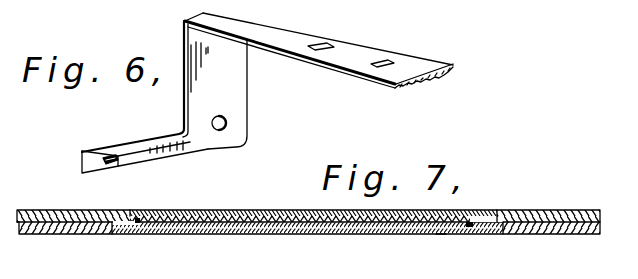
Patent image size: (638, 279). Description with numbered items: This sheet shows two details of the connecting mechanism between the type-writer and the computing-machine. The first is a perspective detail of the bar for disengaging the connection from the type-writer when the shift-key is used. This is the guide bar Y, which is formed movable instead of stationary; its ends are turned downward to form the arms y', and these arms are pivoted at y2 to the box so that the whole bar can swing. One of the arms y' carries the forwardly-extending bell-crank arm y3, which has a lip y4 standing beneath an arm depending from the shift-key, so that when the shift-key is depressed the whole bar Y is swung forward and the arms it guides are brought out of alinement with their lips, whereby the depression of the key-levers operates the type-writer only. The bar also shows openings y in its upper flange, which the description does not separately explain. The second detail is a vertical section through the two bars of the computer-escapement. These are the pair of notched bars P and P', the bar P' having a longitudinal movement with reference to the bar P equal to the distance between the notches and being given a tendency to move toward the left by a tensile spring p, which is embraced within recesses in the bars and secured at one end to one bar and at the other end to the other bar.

In FIG. 6, the guide bar Y is at (435, 61).
In FIG. 6, the slots in bracket top flange y is at (351, 81).
In FIG. 6, the downturned end arm y' is at (182, 86).
In FIG. 6, the pivot y2 is at (227, 125).
In FIG. 6, the bell-crank arm y3 is at (198, 149).
In FIG. 6, the lip y4 is at (120, 163).
In FIG. 7, the notched escapement bar P is at (308, 236).
In FIG. 7, the notched escapement bar P' is at (334, 202).
In FIG. 7, the tensile spring p is at (441, 234).